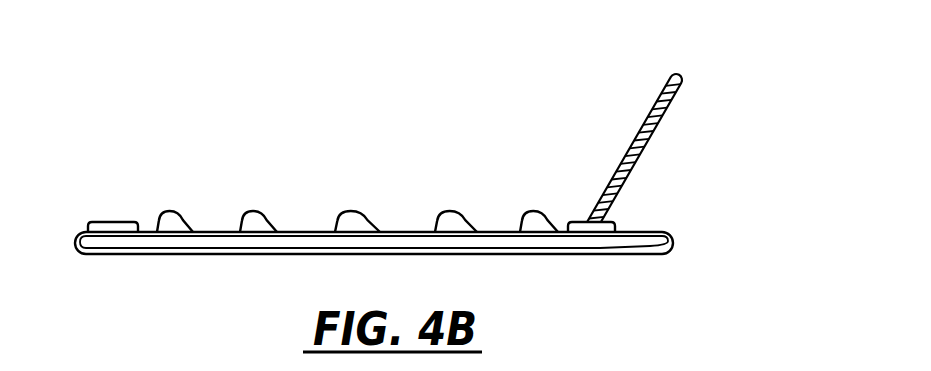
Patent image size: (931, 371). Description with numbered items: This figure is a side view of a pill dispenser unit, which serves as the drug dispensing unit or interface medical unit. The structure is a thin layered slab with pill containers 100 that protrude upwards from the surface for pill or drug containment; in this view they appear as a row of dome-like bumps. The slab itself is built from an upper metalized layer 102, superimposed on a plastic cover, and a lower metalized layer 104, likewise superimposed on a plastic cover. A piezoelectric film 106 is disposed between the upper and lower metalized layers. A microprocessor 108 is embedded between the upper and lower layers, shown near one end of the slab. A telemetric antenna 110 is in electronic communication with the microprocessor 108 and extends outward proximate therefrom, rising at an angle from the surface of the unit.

The pill containers 100 is at (255, 210).
The upper metalized layer 102 is at (113, 222).
The lower metalized layer 104 is at (657, 257).
The piezoelectric film 106 is at (545, 237).
The microprocessor 108 is at (614, 222).
The telemetric antenna 110 is at (678, 82).